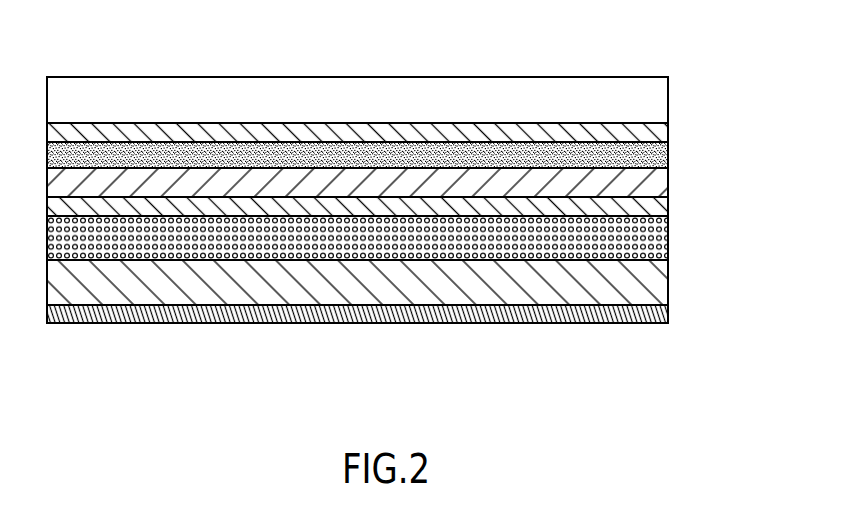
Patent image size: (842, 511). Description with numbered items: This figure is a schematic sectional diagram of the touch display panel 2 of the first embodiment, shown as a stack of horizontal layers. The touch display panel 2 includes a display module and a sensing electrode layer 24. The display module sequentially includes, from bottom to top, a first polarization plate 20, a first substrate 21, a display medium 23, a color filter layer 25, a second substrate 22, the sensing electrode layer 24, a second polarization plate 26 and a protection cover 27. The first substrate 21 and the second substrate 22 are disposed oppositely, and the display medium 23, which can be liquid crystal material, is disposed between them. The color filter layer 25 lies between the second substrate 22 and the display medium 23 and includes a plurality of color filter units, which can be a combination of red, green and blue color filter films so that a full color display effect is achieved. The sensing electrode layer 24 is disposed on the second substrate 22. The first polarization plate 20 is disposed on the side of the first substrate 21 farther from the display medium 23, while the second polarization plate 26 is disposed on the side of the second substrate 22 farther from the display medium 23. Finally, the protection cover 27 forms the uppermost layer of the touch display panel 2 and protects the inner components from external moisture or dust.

The touch display panel 2 is at (621, 57).
The first polarization plate 20 is at (664, 315).
The first substrate 21 is at (662, 284).
The second substrate 22 is at (660, 183).
The display medium 23 is at (660, 242).
The sensing electrode layer 24 is at (664, 156).
The color filter layer 25 is at (664, 209).
The second polarization plate 26 is at (662, 128).
The protection cover 27 is at (662, 97).